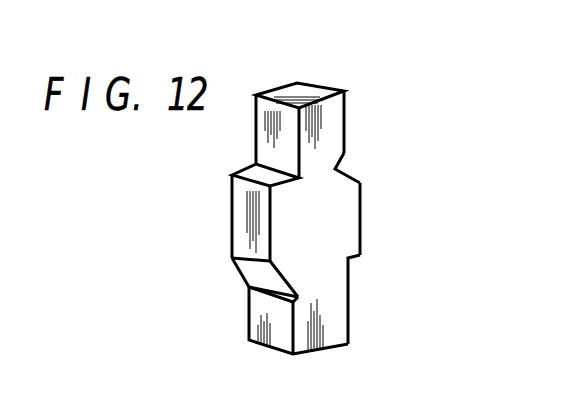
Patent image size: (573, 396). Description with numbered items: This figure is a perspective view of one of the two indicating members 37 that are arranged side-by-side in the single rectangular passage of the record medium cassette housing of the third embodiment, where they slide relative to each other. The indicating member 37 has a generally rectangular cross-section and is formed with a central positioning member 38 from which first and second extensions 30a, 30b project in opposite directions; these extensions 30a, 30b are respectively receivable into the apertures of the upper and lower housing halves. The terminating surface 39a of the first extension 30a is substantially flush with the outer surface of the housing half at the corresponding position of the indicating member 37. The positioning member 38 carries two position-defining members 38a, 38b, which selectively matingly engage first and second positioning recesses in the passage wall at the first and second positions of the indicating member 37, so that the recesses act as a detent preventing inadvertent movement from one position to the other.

The terminating surface 39a is at (291, 85).
The first extension 30a is at (341, 122).
The indicating member 37 is at (371, 182).
The central positioning member 38 is at (339, 222).
The position-defining member 38a is at (228, 224).
The position-defining member 38b is at (356, 242).
The second extension 30b is at (335, 326).